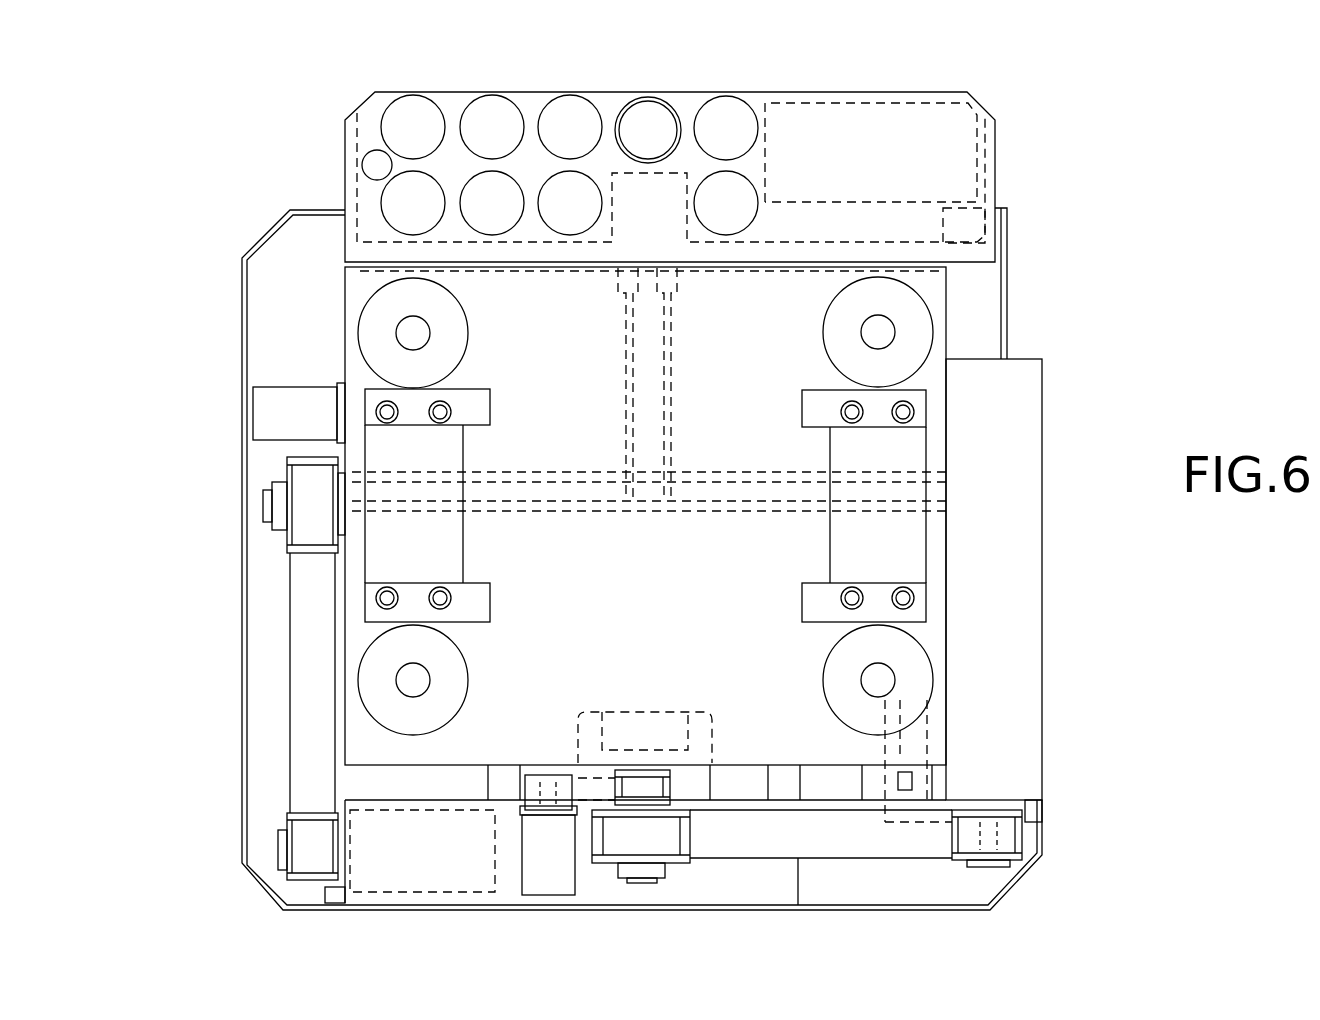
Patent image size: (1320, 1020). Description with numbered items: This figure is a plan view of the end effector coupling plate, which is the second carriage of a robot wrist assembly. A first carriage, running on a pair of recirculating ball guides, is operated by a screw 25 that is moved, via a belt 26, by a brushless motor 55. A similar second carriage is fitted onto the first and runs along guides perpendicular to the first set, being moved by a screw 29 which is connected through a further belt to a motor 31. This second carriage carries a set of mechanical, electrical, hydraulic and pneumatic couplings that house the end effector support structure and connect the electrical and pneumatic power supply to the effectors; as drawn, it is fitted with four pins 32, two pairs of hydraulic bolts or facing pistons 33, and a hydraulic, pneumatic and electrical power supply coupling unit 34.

The power supply coupling unit 34 is at (325, 121).
The pins 32 is at (848, 318).
The hydraulic bolts or facing pistons 33 is at (422, 558).
The screw 25 is at (267, 502).
The belt 26 is at (303, 729).
The brushless motor 55 is at (402, 850).
The screw 29 is at (638, 787).
The motor 31 is at (1010, 625).